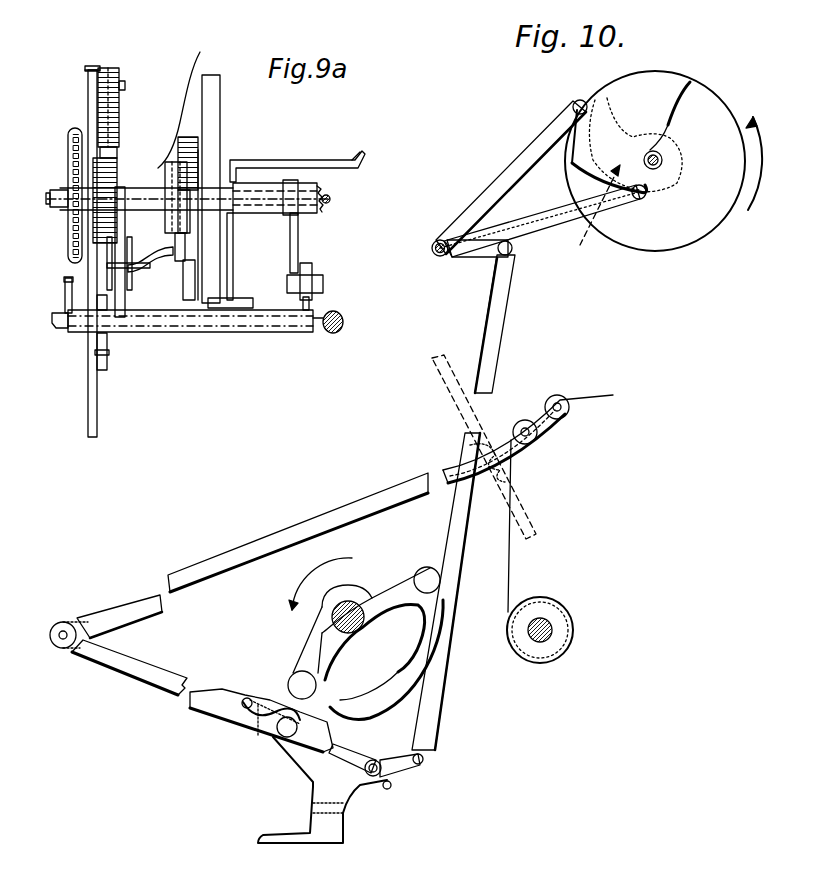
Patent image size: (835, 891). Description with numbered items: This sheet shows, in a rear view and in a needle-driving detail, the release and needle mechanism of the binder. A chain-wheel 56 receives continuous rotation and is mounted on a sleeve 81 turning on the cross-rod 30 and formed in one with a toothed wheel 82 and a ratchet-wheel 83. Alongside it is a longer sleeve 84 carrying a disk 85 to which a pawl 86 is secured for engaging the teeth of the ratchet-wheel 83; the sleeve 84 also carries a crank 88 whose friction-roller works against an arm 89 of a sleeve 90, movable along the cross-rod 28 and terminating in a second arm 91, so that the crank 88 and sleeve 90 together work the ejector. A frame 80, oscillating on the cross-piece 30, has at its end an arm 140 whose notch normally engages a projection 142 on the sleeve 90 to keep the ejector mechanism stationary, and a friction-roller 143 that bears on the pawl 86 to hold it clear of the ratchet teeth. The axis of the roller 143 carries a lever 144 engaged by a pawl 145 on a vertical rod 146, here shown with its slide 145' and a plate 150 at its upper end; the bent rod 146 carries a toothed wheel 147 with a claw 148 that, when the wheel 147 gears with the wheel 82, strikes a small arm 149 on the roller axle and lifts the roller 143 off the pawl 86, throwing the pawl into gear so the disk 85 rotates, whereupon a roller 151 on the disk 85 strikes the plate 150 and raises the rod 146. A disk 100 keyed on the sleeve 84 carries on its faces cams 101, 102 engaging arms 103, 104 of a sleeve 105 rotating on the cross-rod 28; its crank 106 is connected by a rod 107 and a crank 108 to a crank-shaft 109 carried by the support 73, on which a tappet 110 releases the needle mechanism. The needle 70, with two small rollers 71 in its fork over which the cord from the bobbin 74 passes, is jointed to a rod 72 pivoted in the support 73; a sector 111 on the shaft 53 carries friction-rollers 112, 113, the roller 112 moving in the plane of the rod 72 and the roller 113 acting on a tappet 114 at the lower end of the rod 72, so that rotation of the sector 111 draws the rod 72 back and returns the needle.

In FIG. 9A, the cross-rod 28 is at (58, 328).
In FIG. 10, the cross-rod 28 is at (430, 254).
In FIG. 9A, the cross-rod 30 is at (329, 203).
In FIG. 10, the shaft 53 is at (338, 615).
In FIG. 9A, the chain-wheel 56 is at (68, 158).
In FIG. 10, the needle 70 is at (278, 542).
In FIG. 10, the small rollers 71 is at (518, 426).
In FIG. 10, the rod 72 is at (170, 683).
In FIG. 10, the support 73 is at (310, 757).
In FIG. 10, the bobbin 74 is at (538, 663).
In FIG. 9A, the frame 80 is at (367, 152).
In FIG. 9A, the sleeve 81 is at (160, 210).
In FIG. 9A, the toothed wheel 82 is at (120, 186).
In FIG. 9A, the ratchet-wheel 83 is at (200, 168).
In FIG. 9A, the sleeve 84 is at (322, 187).
In FIG. 10, the sleeve 84 is at (667, 166).
In FIG. 9A, the disk 85 is at (221, 93).
In FIG. 9A, the pawl 86 is at (190, 297).
In FIG. 9A, the crank 88 is at (298, 242).
In FIG. 9A, the arm 89 is at (312, 306).
In FIG. 9A, the sleeve 90 is at (270, 333).
In FIG. 9A, the second arm 91 is at (65, 294).
In FIG. 10, the disk 100 is at (717, 97).
In FIG. 10, the cam 101 is at (590, 218).
In FIG. 10, the cam 102 is at (664, 75).
In FIG. 10, the arm 103 is at (528, 157).
In FIG. 10, the arm 104 is at (543, 217).
In FIG. 10, the sleeve 105 is at (432, 247).
In FIG. 10, the crank 106 is at (486, 253).
In FIG. 10, the rod 107 is at (492, 342).
In FIG. 10, the crank 108 is at (402, 762).
In FIG. 10, the crank-shaft 109 is at (387, 789).
In FIG. 10, the tappet 110 is at (348, 752).
In FIG. 10, the sector 111 is at (412, 663).
In FIG. 10, the friction-roller 112 is at (416, 575).
In FIG. 10, the friction-roller 113 is at (305, 677).
In FIG. 10, the tappet 114 is at (328, 702).
In FIG. 9A, the arm 140 is at (234, 243).
In FIG. 9A, the projection 142 is at (240, 296).
In FIG. 9A, the friction-roller 143 is at (236, 164).
In FIG. 9A, the lever 144 is at (118, 250).
In FIG. 9A, the pawl 145 is at (132, 340).
In FIG. 9A, the slide bar 145' is at (147, 273).
In FIG. 9A, the vertical rod 146 is at (84, 386).
In FIG. 9A, the toothed wheel 147 is at (118, 134).
In FIG. 9A, the claw 148 is at (122, 97).
In FIG. 9A, the small arm 149 is at (198, 101).
In FIG. 9A, the plate 150 is at (95, 68).
In FIG. 9A, the roller 151 is at (128, 288).